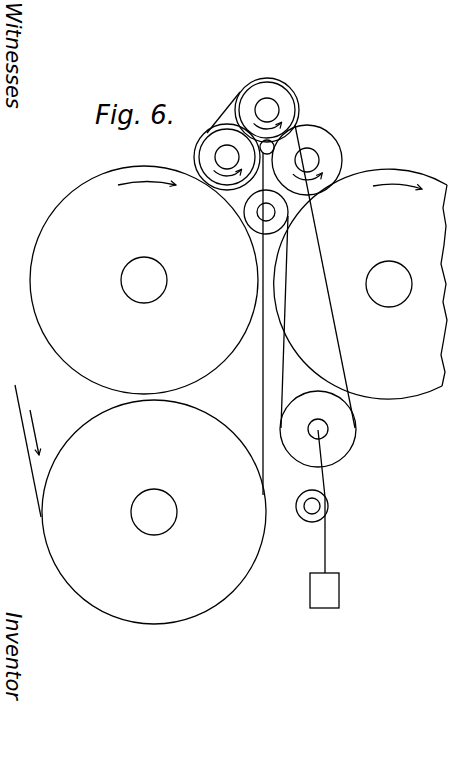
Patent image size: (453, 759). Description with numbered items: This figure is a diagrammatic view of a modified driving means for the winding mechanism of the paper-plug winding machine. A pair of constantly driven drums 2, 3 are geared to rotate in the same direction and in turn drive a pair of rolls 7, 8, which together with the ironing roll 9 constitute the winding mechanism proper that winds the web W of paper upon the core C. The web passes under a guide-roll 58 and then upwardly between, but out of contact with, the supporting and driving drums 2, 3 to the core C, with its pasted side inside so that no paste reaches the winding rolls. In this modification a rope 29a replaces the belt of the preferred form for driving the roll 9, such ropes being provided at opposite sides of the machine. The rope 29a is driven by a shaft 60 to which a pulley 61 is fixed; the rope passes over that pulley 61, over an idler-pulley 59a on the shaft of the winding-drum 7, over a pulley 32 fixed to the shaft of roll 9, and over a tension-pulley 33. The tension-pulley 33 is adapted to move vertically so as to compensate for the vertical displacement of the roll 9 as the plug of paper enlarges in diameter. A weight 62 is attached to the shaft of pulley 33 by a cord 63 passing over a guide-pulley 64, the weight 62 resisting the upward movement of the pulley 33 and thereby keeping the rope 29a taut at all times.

The drum 2 is at (144, 280).
The drum 3 is at (360, 284).
The winding-drum 7 is at (207, 134).
The roll 8 is at (331, 146).
The ironing roll 9 is at (269, 83).
The pulley 32 is at (267, 103).
The tension-pulley 33 is at (349, 437).
The guide-roll 58 is at (154, 512).
The idler-pulley 59a is at (205, 155).
The shaft 60 is at (258, 216).
The pulley 61 is at (287, 213).
The weight 62 is at (324, 590).
The cord 63 is at (320, 493).
The guide-pulley 64 is at (307, 500).
The rope 29a is at (322, 273).
The core C is at (274, 150).
The web W is at (264, 386).